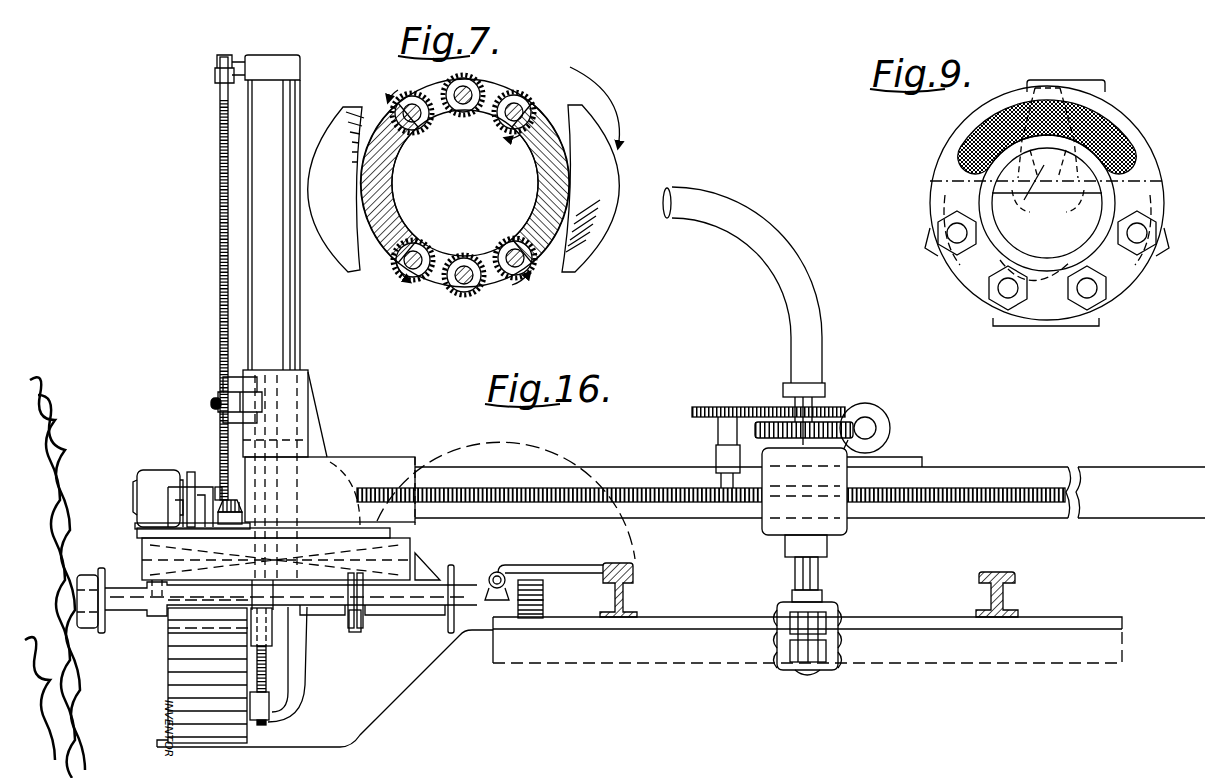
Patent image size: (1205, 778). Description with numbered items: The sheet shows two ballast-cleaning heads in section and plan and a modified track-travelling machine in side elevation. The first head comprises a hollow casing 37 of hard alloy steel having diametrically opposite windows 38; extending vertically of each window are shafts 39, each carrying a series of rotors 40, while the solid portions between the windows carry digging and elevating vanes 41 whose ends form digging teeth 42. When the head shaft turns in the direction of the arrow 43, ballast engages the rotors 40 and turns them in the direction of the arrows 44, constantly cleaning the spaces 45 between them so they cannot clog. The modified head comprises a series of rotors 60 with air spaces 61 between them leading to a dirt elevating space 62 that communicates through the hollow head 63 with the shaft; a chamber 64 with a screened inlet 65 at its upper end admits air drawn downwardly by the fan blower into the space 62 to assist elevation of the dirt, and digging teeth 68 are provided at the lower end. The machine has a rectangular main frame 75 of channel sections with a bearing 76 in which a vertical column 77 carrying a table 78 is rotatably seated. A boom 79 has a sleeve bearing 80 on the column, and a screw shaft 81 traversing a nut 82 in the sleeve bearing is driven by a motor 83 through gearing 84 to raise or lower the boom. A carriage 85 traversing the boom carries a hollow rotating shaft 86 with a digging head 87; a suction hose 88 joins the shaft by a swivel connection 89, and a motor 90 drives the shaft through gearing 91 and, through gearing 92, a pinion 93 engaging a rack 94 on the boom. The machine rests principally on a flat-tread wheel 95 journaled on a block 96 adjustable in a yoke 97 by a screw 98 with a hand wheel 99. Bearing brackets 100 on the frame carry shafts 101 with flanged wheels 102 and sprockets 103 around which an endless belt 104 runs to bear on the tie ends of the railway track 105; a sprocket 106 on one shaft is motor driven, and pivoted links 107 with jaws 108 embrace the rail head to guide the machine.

In FIG. 7, the hollow casing 37 is at (575, 238).
In FIG. 7, the windows 38 is at (470, 92).
In FIG. 7, the shafts 39 is at (470, 98).
In FIG. 7, the rotors 40 is at (490, 118).
In FIG. 7, the digging and elevating vanes 41 is at (590, 166).
In FIG. 7, the digging teeth 42 is at (356, 105).
In FIG. 7, the arrow 43 is at (604, 112).
In FIG. 7, the arrows 44 is at (440, 124).
In FIG. 7, the spaces 45 is at (447, 262).
In FIG. 9, the rotors 60 is at (1100, 312).
In FIG. 9, the air spaces 61 is at (962, 265).
In FIG. 9, the dirt elevating space 62 is at (1047, 203).
In FIG. 9, the hollow head 63 is at (1146, 268).
In FIG. 9, the chamber 64 is at (1042, 156).
In FIG. 9, the screened inlet 65 is at (1105, 130).
In FIG. 9, the digging teeth 68 is at (1090, 86).
In FIG. 16, the main frame 75 is at (412, 556).
In FIG. 16, the bearing 76 is at (250, 648).
In FIG. 16, the vertical column 77 is at (312, 320).
In FIG. 16, the table 78 is at (392, 534).
In FIG. 16, the boom 79 is at (618, 472).
In FIG. 16, the sleeve bearing 80 is at (310, 395).
In FIG. 16, the screw shaft 81 is at (220, 245).
In FIG. 16, the nut 82 is at (222, 395).
In FIG. 16, the motor 83 is at (152, 470).
In FIG. 16, the gearing 84 is at (222, 495).
In FIG. 16, the carriage 85 is at (835, 522).
In FIG. 16, the hollow rotating shaft 86 is at (820, 583).
In FIG. 16, the digging head 87 is at (825, 660).
In FIG. 16, the suction hose 88 is at (833, 317).
In FIG. 16, the swivel connection 89 is at (826, 390).
In FIG. 16, the motor 90 is at (890, 420).
In FIG. 16, the gearing 91 is at (882, 450).
In FIG. 16, the gearing 92 is at (782, 422).
In FIG. 16, the pinion 93 is at (727, 503).
In FIG. 16, the rack 94 is at (670, 488).
In FIG. 16, the flat-tread wheel 95 is at (240, 735).
In FIG. 16, the block 96 is at (292, 684).
In FIG. 16, the yoke 97 is at (270, 618).
In FIG. 16, the screw 98 is at (268, 690).
In FIG. 16, the hand wheel 99 is at (212, 404).
In FIG. 16, the bearing brackets 100 is at (128, 610).
In FIG. 16, the shafts 101 is at (363, 605).
In FIG. 16, the flanged wheels 102 is at (88, 576).
In FIG. 16, the sprockets 103 is at (545, 606).
In FIG. 16, the endless belt 104 is at (545, 587).
In FIG. 16, the railway track 105 is at (654, 617).
In FIG. 16, the sprocket 106 is at (355, 632).
In FIG. 16, the pivoted links 107 is at (558, 573).
In FIG. 16, the jaws 108 is at (634, 577).